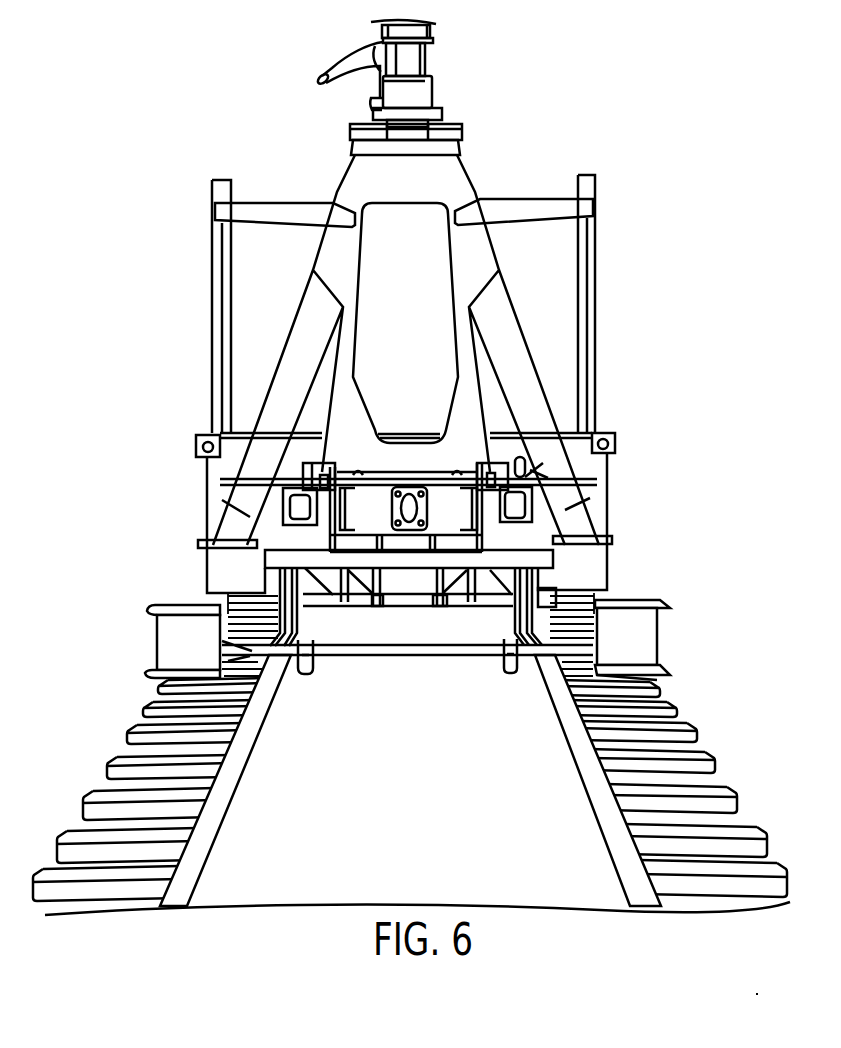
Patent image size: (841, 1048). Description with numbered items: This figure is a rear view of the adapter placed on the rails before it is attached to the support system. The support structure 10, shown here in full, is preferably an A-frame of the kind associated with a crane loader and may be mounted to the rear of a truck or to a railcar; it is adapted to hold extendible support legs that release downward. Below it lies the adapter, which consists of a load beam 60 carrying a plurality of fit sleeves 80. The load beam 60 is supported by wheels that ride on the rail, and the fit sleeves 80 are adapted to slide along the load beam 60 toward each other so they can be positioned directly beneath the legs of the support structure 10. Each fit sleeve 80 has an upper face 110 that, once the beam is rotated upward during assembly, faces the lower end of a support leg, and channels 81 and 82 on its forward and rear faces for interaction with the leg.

The support structure 10 is at (485, 243).
The load beam 60 is at (400, 647).
The fit sleeve 80 is at (650, 615).
The channel 81 is at (155, 672).
The channel 82 is at (155, 610).
The upper face 110 is at (650, 653).